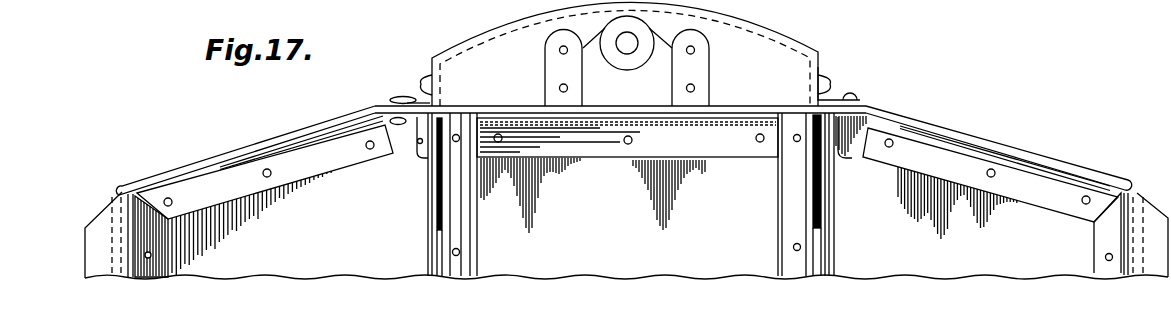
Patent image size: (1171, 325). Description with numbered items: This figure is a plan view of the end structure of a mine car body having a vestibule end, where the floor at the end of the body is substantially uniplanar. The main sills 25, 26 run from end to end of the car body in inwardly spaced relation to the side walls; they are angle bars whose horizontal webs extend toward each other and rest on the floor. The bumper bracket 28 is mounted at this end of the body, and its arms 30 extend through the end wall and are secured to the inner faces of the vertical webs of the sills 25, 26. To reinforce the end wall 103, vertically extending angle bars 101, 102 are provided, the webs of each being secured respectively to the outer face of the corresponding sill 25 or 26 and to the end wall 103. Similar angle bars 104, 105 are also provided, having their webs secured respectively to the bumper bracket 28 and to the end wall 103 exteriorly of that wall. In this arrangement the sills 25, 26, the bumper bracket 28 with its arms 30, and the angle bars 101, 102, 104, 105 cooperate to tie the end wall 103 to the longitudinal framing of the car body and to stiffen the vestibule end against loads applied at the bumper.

The main sill 25 is at (430, 223).
The main sill 26 is at (826, 217).
The bumper bracket 28 is at (789, 63).
The arm 30 is at (442, 212).
The vertically extending angle bar 101 is at (422, 124).
The vertically extending angle bar 102 is at (838, 134).
The end wall 103 is at (857, 108).
The angle bar 104 is at (422, 93).
The angle bar 105 is at (823, 73).